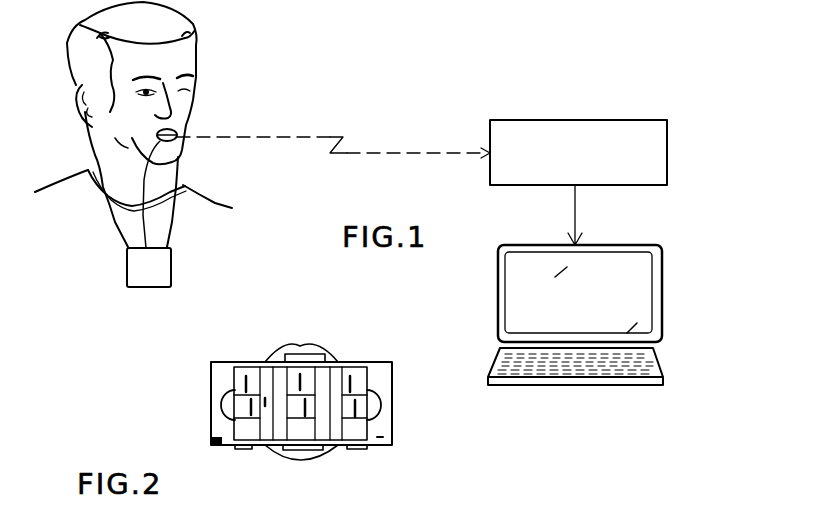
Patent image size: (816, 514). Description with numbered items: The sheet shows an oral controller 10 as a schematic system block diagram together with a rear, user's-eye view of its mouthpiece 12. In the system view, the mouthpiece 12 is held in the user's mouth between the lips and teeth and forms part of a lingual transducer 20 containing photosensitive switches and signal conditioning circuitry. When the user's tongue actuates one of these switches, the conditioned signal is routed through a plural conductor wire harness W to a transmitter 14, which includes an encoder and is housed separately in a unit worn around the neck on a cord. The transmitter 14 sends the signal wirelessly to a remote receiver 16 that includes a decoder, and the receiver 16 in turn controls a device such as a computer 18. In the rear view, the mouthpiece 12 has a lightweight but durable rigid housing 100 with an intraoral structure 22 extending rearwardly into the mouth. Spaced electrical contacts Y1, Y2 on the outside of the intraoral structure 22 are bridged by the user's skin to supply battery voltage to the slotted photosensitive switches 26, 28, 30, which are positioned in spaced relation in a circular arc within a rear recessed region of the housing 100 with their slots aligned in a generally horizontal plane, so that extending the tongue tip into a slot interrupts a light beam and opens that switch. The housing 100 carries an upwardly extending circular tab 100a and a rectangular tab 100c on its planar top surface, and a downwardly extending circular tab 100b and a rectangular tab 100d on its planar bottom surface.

In FIG. 1, the oral controller 10 is at (343, 67).
In FIG. 1, the mouthpiece 12 is at (173, 135).
In FIG. 2, the mouthpiece 12 is at (168, 421).
In FIG. 1, the transmitter 14 is at (155, 276).
In FIG. 1, the wire harness W is at (144, 180).
In FIG. 1, the lingual transducer 20 is at (228, 197).
In FIG. 1, the receiver 16 is at (667, 155).
In FIG. 1, the computer 18 is at (658, 273).
In FIG. 2, the intraoral structure 22 is at (401, 366).
In FIG. 2, the slotted photosensitive switch 26 is at (251, 356).
In FIG. 2, the slotted photosensitive switch 28 is at (303, 349).
In FIG. 2, the slotted photosensitive switch 30 is at (361, 356).
In FIG. 2, the housing 100 is at (217, 377).
In FIG. 2, the circular tab 100a is at (322, 357).
In FIG. 2, the circular tab 100b is at (308, 452).
In FIG. 2, the rectangular tab 100c is at (328, 357).
In FIG. 2, the rectangular tab 100d is at (327, 448).
In FIG. 2, the electrical contact Y1 is at (241, 448).
In FIG. 2, the electrical contact Y2 is at (357, 449).